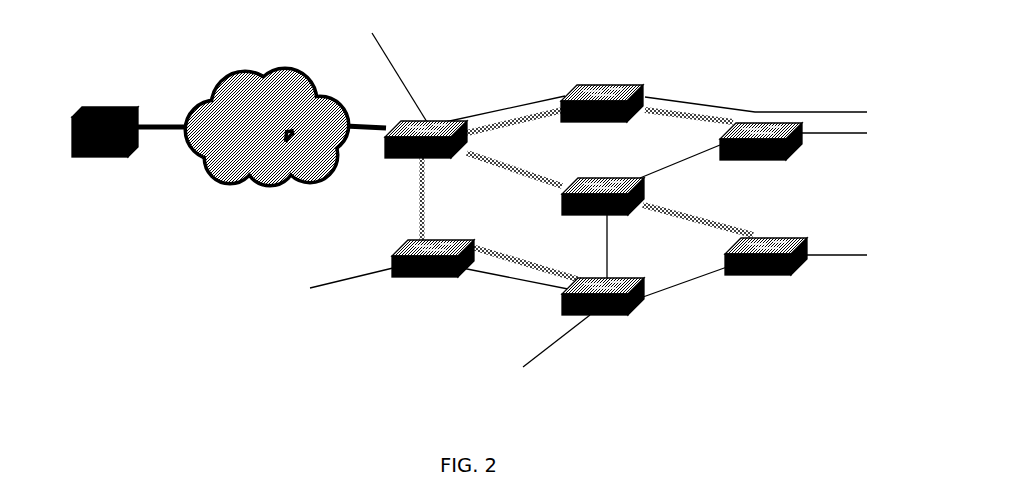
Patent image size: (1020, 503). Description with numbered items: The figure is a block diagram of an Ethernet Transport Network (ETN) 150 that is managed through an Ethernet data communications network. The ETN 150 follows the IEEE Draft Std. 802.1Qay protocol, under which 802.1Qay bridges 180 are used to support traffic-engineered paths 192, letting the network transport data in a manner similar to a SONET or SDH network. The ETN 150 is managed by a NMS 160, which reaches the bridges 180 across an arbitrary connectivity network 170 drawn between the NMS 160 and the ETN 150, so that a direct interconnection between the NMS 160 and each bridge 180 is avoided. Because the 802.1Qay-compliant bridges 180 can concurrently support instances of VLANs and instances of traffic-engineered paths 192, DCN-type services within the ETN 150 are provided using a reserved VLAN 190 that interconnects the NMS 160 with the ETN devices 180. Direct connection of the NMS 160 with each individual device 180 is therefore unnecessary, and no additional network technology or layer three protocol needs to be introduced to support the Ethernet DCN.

The Ethernet Transport Network 150 is at (221, 309).
The NMS 160 is at (118, 105).
The arbitrary connectivity network 170 is at (253, 78).
The 802.1Qay bridge 180 is at (423, 287).
The reserved VLAN 190 is at (408, 200).
The traffic-engineered path 192 is at (675, 300).